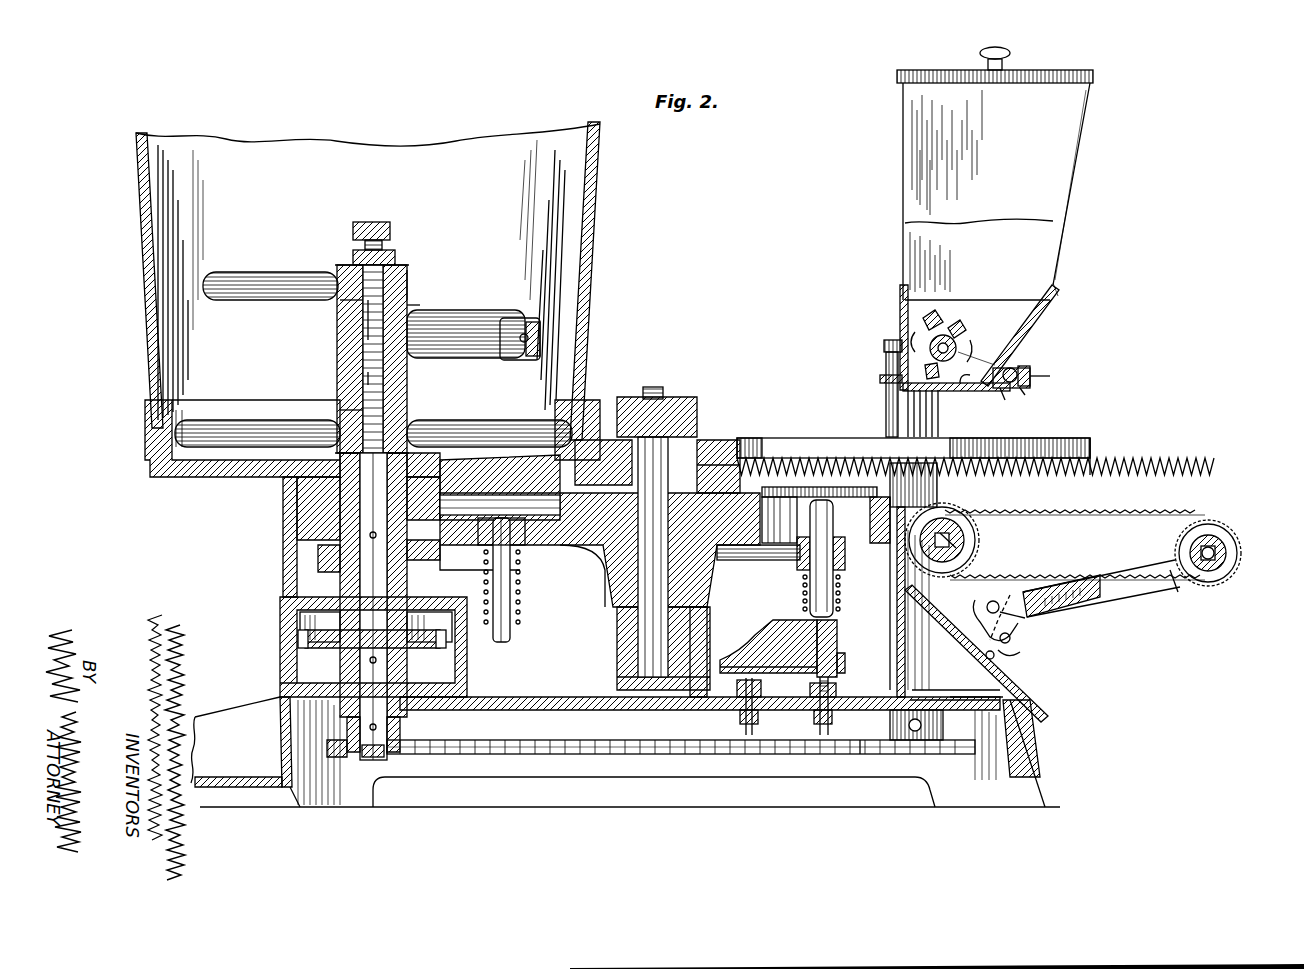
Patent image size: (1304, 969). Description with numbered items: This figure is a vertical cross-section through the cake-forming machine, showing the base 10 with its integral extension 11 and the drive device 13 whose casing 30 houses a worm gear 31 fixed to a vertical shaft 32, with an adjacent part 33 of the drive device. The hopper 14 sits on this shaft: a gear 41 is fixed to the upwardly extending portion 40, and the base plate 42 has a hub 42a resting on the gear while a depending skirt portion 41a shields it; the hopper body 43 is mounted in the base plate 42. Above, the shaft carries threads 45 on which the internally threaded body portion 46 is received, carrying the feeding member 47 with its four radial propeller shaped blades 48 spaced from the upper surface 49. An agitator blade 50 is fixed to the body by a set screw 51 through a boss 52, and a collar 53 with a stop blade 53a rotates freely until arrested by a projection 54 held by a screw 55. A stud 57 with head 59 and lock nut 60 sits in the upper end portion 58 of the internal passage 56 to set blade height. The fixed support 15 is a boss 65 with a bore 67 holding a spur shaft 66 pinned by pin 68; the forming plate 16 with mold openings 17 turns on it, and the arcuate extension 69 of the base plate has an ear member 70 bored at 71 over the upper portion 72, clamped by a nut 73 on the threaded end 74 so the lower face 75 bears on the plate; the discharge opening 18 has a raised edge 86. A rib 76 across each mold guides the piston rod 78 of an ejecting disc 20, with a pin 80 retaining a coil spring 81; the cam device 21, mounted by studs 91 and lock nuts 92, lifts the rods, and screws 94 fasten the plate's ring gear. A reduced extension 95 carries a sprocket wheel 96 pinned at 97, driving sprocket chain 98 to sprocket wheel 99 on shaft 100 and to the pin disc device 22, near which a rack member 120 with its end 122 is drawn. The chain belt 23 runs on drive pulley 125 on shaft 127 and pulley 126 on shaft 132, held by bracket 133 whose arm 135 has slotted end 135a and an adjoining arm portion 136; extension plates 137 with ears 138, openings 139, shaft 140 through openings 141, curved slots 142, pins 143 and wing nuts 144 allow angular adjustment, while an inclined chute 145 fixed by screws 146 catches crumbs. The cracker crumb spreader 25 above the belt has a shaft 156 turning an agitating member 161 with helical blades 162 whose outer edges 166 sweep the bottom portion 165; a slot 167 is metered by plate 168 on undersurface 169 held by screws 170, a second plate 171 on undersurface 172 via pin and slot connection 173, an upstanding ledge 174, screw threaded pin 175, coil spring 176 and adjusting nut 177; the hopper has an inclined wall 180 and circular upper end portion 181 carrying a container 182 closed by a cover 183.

The base 10 is at (590, 782).
The integral extension 11 is at (245, 788).
The drive device 13 is at (300, 617).
The hopper 14 is at (140, 261).
The fixed support 15 is at (716, 626).
The forming plate 16 is at (566, 560).
The mold openings 17 is at (520, 470).
The discharge opening 18 is at (455, 450).
The ejecting discs 20 is at (590, 505).
The cam device 21 is at (833, 640).
The pin disc device 22 is at (1058, 427).
The chain belt 23 is at (1153, 512).
The cracker crumb spreader 25 is at (892, 192).
The casing 30 is at (290, 661).
The worm gear 31 is at (300, 637).
The shaft 32 is at (372, 582).
The bearing 33 is at (425, 536).
The upwardly extending portion 40 is at (365, 480).
The gear 41 is at (340, 556).
The depending skirt portion 41a is at (286, 545).
The base plate 42 is at (152, 472).
The hub 42a is at (325, 508).
The body 43 is at (148, 218).
The threads 45 is at (362, 376).
The internally threaded body portion 46 is at (352, 410).
The feeding member 47 is at (247, 404).
The radial propeller shaped blades 48 is at (180, 431).
The upper surface 49 is at (228, 484).
The agitator blade 50 is at (243, 272).
The set screw 51 is at (400, 300).
The boss 52 is at (340, 265).
The collar 53 is at (410, 312).
The stop blade 53a is at (455, 310).
The projection 54 is at (522, 318).
The screw 55 is at (522, 352).
The internal passage 56 is at (360, 336).
The stud 57 is at (355, 325).
The upper end portion 58 is at (350, 300).
The head 59 is at (372, 222).
The lock nut 60 is at (398, 258).
The boss 65 is at (690, 690).
The spur shaft 66 is at (652, 720).
The bore 67 is at (630, 665).
The pin 68 is at (655, 640).
The arcuate extension 69 is at (545, 500).
The ear member 70 is at (596, 440).
The bore 71 is at (702, 470).
The upper portion 72 is at (607, 535).
The nut 73 is at (672, 397).
The threaded end 74 is at (652, 388).
The lower face 75 is at (705, 465).
The rib 76 is at (728, 545).
The piston rod 78 is at (812, 585).
The pin 80 is at (496, 640).
The coil spring 81 is at (516, 620).
The edge 86 is at (578, 412).
The studs 91 is at (748, 730).
The lock nuts 92 is at (740, 722).
The screws 94 is at (858, 555).
The reduced extension 95 is at (371, 753).
The sprocket wheel 96 is at (345, 760).
The pin 97 is at (380, 728).
The sprocket chain 98 is at (503, 758).
The sprocket wheel 99 is at (870, 749).
The shaft 100 is at (915, 732).
The rack 120 is at (1080, 440).
The rack end 122 is at (1090, 465).
The drive pulley 125 is at (955, 528).
The pulley 126 is at (1222, 545).
The shaft 127 is at (973, 529).
The shaft 132 is at (1228, 565).
The bracket 133 is at (1095, 567).
The arm 135 is at (1178, 587).
The slotted end portion 135a is at (1212, 522).
The arm 136 is at (1095, 606).
The extension plates 137 is at (992, 661).
The ear 138 is at (1010, 612).
The opening 139 is at (955, 674).
The shaft 140 is at (996, 604).
The openings 141 is at (990, 612).
The curved slots 142 is at (898, 660).
The screw threaded pins 143 is at (1012, 640).
The wing nuts 144 is at (1020, 650).
The inclined chute 145 is at (1000, 692).
The screws 146 is at (905, 600).
The shaft 156 is at (930, 346).
The agitating member 161 is at (968, 325).
The helical blades 162 is at (900, 302).
The bottom portion 165 is at (893, 368).
The outer edges 166 is at (940, 320).
The slot 167 is at (948, 395).
The plate 168 is at (890, 382).
The undersurface 169 is at (915, 405).
The screws 170 is at (900, 398).
The second plate 171 is at (982, 396).
The undersurface 172 is at (1000, 352).
The pin and slot connection 173 is at (1000, 395).
The upstanding ledge 174 is at (1039, 396).
The screw threaded pin 175 is at (1040, 375).
The coil spring 176 is at (1010, 362).
The adjusting nut 177 is at (1042, 382).
The inclined wall 180 is at (1030, 330).
The circular upper end portion 181 is at (1040, 300).
The container 182 is at (1050, 160).
The cover 183 is at (1093, 82).